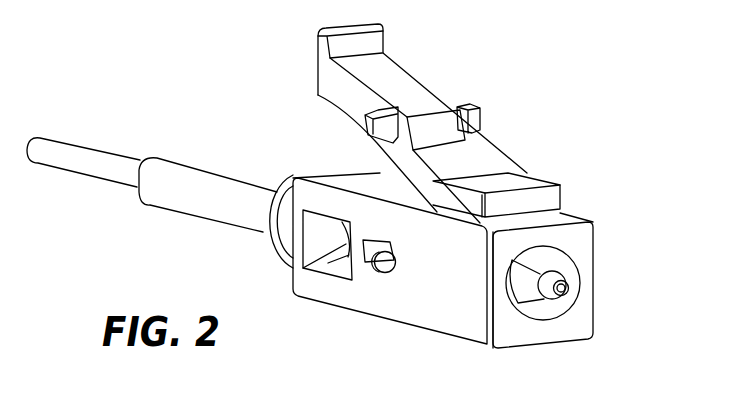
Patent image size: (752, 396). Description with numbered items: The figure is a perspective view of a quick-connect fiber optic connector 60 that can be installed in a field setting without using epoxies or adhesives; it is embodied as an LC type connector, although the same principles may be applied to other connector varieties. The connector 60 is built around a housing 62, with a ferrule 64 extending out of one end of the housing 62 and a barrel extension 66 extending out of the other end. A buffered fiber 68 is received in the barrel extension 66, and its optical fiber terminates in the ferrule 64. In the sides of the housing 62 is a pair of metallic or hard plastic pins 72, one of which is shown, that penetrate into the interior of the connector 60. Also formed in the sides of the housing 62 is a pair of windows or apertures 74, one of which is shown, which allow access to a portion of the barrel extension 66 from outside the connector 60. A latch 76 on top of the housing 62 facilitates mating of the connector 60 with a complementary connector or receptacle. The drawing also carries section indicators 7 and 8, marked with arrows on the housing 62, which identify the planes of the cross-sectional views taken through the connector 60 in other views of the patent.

The quick-connect fiber optic connector 60 is at (534, 66).
The housing 62 is at (333, 207).
The ferrule 64 is at (530, 273).
The barrel extension 66 is at (217, 200).
The buffered fiber 68 is at (78, 162).
The pin 72 is at (380, 260).
The window 74 is at (342, 243).
The latch 76 is at (398, 88).
The section line 7- 7 is at (542, 175).
The section line 8- 8 is at (480, 285).